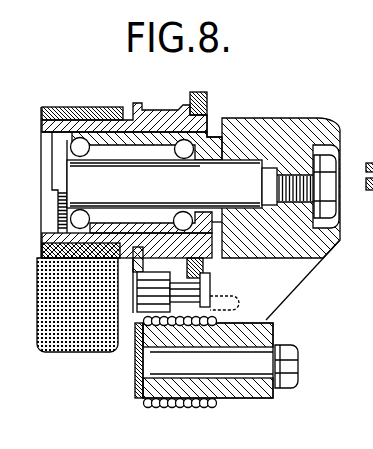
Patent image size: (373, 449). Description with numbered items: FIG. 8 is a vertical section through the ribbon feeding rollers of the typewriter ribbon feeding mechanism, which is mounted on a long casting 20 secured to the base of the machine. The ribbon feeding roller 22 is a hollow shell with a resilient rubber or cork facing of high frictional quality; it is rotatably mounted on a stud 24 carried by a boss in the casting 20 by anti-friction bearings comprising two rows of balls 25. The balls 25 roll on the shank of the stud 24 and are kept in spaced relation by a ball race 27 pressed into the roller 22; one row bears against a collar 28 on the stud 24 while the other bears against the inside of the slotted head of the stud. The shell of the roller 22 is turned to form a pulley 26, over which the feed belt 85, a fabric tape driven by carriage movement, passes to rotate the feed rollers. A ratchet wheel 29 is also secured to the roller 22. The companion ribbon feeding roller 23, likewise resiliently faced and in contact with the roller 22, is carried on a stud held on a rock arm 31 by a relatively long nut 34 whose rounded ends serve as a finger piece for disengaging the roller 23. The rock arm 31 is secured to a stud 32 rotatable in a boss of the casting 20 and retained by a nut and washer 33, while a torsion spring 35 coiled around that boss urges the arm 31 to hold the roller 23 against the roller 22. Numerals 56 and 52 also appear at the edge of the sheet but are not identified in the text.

The casting 20 is at (307, 284).
The ribbon feeding roller 22 is at (41, 128).
The ribbon feeding roller 23 is at (55, 320).
The stud 24 is at (235, 183).
The balls 25 is at (210, 126).
The pulley 26 is at (133, 103).
The ball race 27 is at (132, 152).
The collar 28 is at (221, 224).
The ratchet wheel 29 is at (227, 282).
The rock arm 31 is at (133, 392).
The stud 32 is at (227, 368).
The nut and washer 33 is at (298, 366).
The nut 34 is at (173, 288).
The torsion spring 35 is at (170, 409).
The feed belt 85 is at (163, 110).
The element 56 is at (362, 39).
The element 52 is at (362, 295).